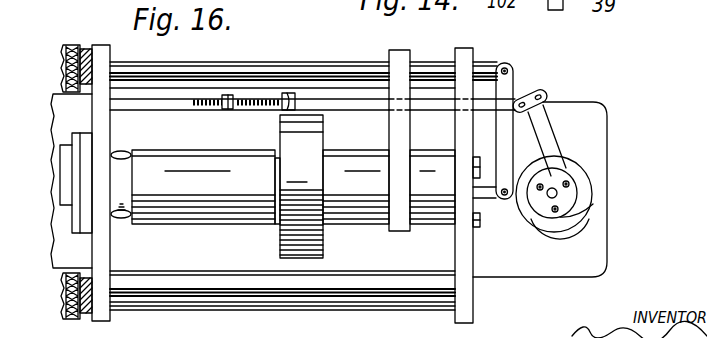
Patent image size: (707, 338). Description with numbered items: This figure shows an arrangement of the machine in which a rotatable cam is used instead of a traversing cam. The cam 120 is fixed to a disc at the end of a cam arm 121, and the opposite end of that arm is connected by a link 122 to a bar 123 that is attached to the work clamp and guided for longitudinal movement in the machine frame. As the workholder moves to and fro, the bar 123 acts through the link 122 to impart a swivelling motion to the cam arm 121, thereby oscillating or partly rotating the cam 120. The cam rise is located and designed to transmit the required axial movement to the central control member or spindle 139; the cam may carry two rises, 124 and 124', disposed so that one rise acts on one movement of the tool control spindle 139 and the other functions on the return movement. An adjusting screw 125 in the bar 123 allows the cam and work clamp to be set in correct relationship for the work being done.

The cam 120 is at (593, 198).
The cam arm 121 is at (538, 127).
The link 122 is at (537, 90).
The bar 123 is at (337, 107).
The cam rise 124 is at (599, 233).
The cam rise 124' is at (595, 187).
The adjusting screw 125 is at (244, 117).
The central control member or spindle 139 is at (483, 199).